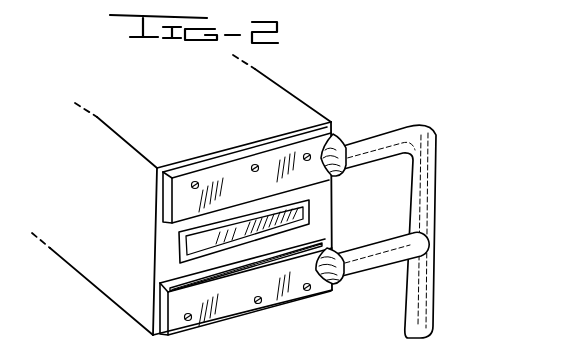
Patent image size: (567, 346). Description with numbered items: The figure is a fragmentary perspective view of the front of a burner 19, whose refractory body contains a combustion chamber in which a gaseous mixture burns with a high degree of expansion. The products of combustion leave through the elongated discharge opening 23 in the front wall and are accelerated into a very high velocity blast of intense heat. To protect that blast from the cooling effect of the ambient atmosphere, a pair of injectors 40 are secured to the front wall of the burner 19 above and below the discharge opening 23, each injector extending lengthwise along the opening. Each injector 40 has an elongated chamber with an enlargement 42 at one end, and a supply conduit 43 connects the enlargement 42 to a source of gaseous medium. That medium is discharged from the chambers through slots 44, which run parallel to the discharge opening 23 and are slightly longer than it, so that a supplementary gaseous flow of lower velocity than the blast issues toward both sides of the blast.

The burner 19 is at (303, 98).
The discharge opening 23 is at (303, 216).
The injectors 40 is at (231, 179).
The enlargement 42 is at (340, 150).
The supply conduit 43 is at (417, 318).
The slots 44 is at (170, 286).